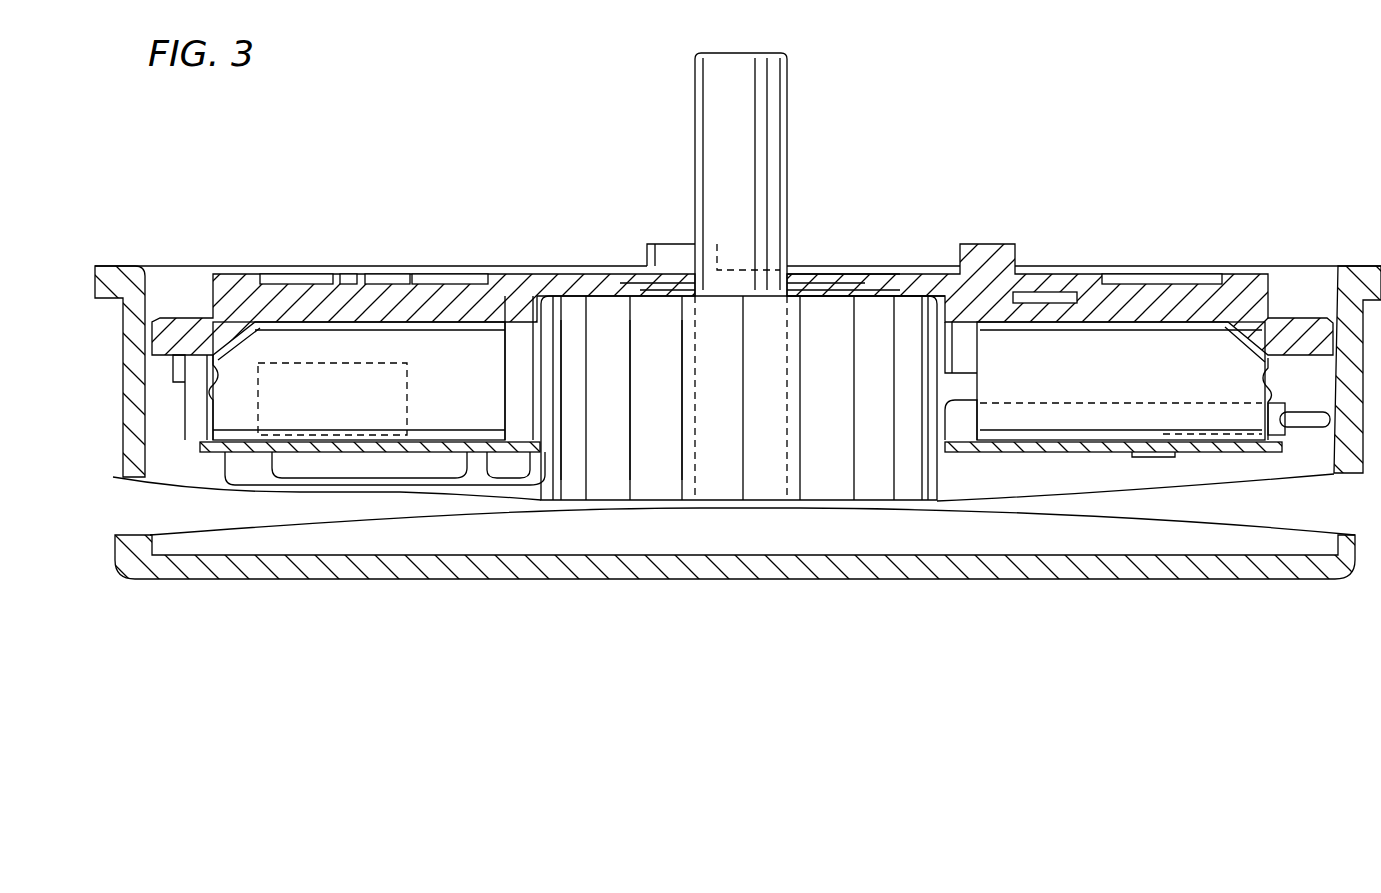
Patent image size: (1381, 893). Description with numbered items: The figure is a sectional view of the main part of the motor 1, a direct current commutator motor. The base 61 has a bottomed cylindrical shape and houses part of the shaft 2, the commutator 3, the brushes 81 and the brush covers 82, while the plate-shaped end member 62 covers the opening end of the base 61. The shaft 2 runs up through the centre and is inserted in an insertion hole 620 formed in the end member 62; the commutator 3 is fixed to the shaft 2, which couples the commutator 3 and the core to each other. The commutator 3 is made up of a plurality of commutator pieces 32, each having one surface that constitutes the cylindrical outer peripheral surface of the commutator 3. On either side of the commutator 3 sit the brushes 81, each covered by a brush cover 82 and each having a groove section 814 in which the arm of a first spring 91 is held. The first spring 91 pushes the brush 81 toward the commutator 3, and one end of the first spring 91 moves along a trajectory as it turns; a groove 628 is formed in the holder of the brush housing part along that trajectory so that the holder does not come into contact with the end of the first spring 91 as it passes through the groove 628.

The motor 1 is at (1044, 130).
The shaft 2 is at (788, 108).
The commutator 3 is at (646, 298).
The commutator piece 32 is at (658, 490).
The base 61 is at (123, 351).
The end member 62 is at (225, 272).
The insertion hole 620 is at (822, 283).
The groove 628 is at (395, 389).
The brush 81 is at (1162, 335).
The groove section 814 is at (1273, 381).
The brush cover 82 is at (1071, 450).
The first spring 91 is at (1299, 432).